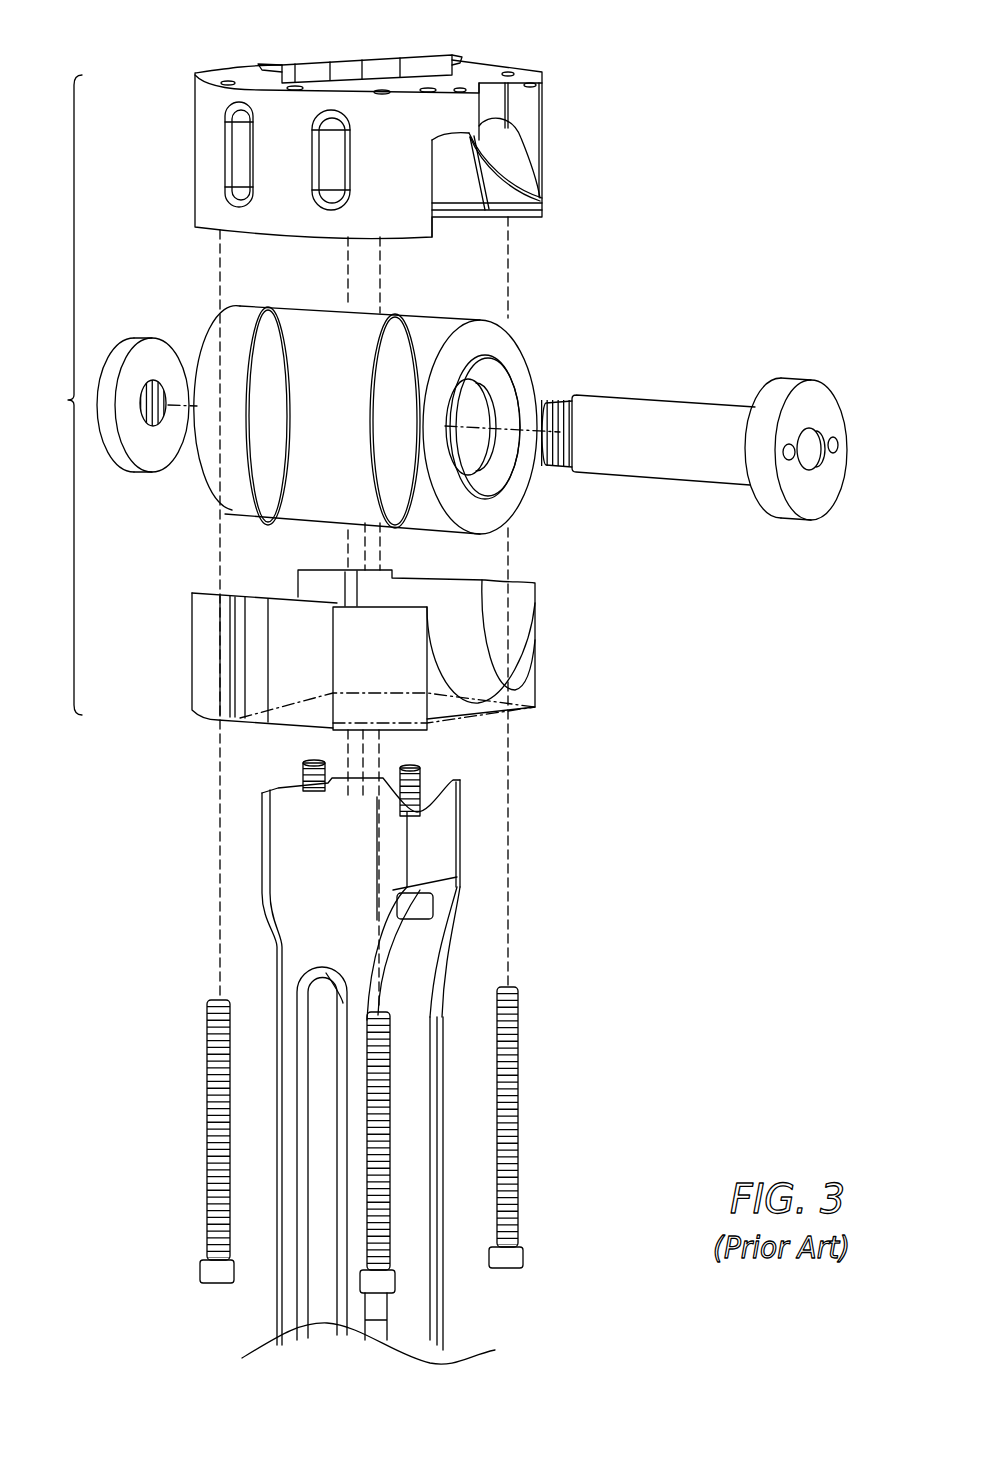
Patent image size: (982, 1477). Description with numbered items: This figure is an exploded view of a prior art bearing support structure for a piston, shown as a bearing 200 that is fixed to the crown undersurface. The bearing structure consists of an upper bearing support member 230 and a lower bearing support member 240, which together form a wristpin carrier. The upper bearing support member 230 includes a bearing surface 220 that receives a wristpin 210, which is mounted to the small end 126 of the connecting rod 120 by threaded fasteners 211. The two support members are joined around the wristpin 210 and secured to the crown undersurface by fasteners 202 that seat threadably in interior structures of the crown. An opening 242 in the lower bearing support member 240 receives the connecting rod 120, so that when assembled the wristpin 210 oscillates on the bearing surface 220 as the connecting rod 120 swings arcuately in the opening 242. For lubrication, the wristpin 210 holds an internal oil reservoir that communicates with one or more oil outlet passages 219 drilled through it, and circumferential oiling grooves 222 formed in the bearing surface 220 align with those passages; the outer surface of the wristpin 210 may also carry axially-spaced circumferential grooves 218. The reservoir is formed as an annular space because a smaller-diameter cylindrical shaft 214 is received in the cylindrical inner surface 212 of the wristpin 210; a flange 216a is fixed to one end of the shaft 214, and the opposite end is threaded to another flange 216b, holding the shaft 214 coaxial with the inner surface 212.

The bearing 200 is at (68, 400).
The upper bearing support member 230 is at (540, 160).
The circumferential oiling grooves 222 is at (480, 182).
The bearing surface 220 is at (455, 183).
The oil outlet passages 219 is at (284, 313).
The circumferential grooves 218 is at (255, 488).
The wristpin 210 is at (500, 349).
The cylindrical inner surface 212 is at (473, 413).
The cylindrical shaft 214 is at (697, 425).
The flange 216a is at (836, 492).
The flange 216b is at (143, 338).
The lower bearing support member 240 is at (538, 643).
The opening 242 is at (437, 713).
The threaded fasteners 211 is at (304, 780).
The small end 126 is at (443, 843).
The fasteners 202 is at (209, 1099).
The connecting rod 120 is at (467, 1323).